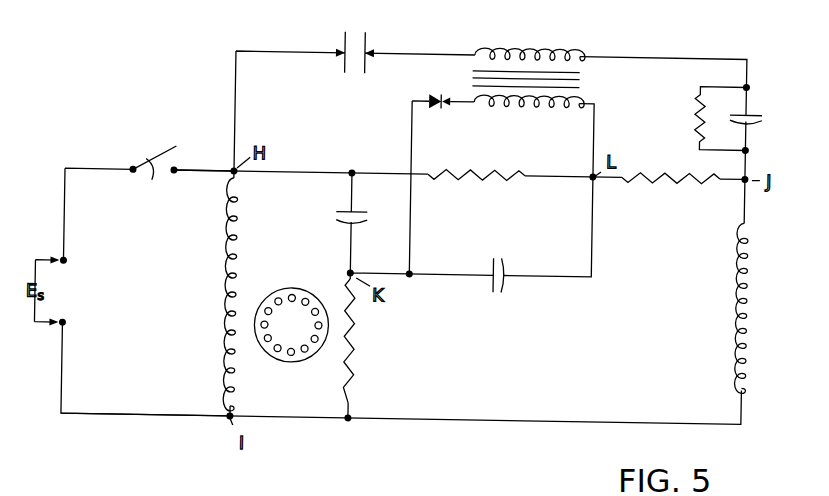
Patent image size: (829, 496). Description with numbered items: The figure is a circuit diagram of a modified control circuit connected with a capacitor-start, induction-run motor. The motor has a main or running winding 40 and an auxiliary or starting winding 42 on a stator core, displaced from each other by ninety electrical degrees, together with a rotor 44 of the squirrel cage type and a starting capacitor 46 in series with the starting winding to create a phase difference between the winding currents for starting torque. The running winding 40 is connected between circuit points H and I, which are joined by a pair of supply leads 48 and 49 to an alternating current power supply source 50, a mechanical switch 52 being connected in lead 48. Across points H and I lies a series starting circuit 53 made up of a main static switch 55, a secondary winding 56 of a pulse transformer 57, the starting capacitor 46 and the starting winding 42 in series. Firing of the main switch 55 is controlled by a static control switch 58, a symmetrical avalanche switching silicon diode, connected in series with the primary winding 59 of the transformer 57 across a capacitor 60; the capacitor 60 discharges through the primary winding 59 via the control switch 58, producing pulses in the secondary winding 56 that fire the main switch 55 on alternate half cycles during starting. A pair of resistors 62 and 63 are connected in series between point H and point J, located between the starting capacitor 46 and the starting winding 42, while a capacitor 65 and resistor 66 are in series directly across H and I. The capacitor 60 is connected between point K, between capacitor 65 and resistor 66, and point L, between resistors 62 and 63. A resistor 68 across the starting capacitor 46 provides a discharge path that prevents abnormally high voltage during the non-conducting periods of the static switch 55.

The main or running winding 40 is at (228, 270).
The auxiliary or starting winding 42 is at (752, 294).
The rotor 44 is at (293, 361).
The starting capacitor 46 is at (766, 113).
The supply lead 48 is at (201, 170).
The supply lead 49 is at (189, 418).
The alternating current power supply source 50 is at (48, 293).
The mechanical switch 52 is at (154, 175).
The series starting circuit 53 is at (333, 47).
The main static switch 55 is at (373, 46).
The secondary winding 56 is at (540, 44).
The pulse transformer 57 is at (586, 74).
The static control switch 58 is at (435, 93).
The primary winding 59 is at (538, 106).
The capacitor 60 is at (498, 293).
The resistor 62 is at (476, 179).
The resistor 63 is at (672, 177).
The capacitor 65 is at (336, 215).
The resistor 66 is at (358, 354).
The resistor 68 is at (693, 105).